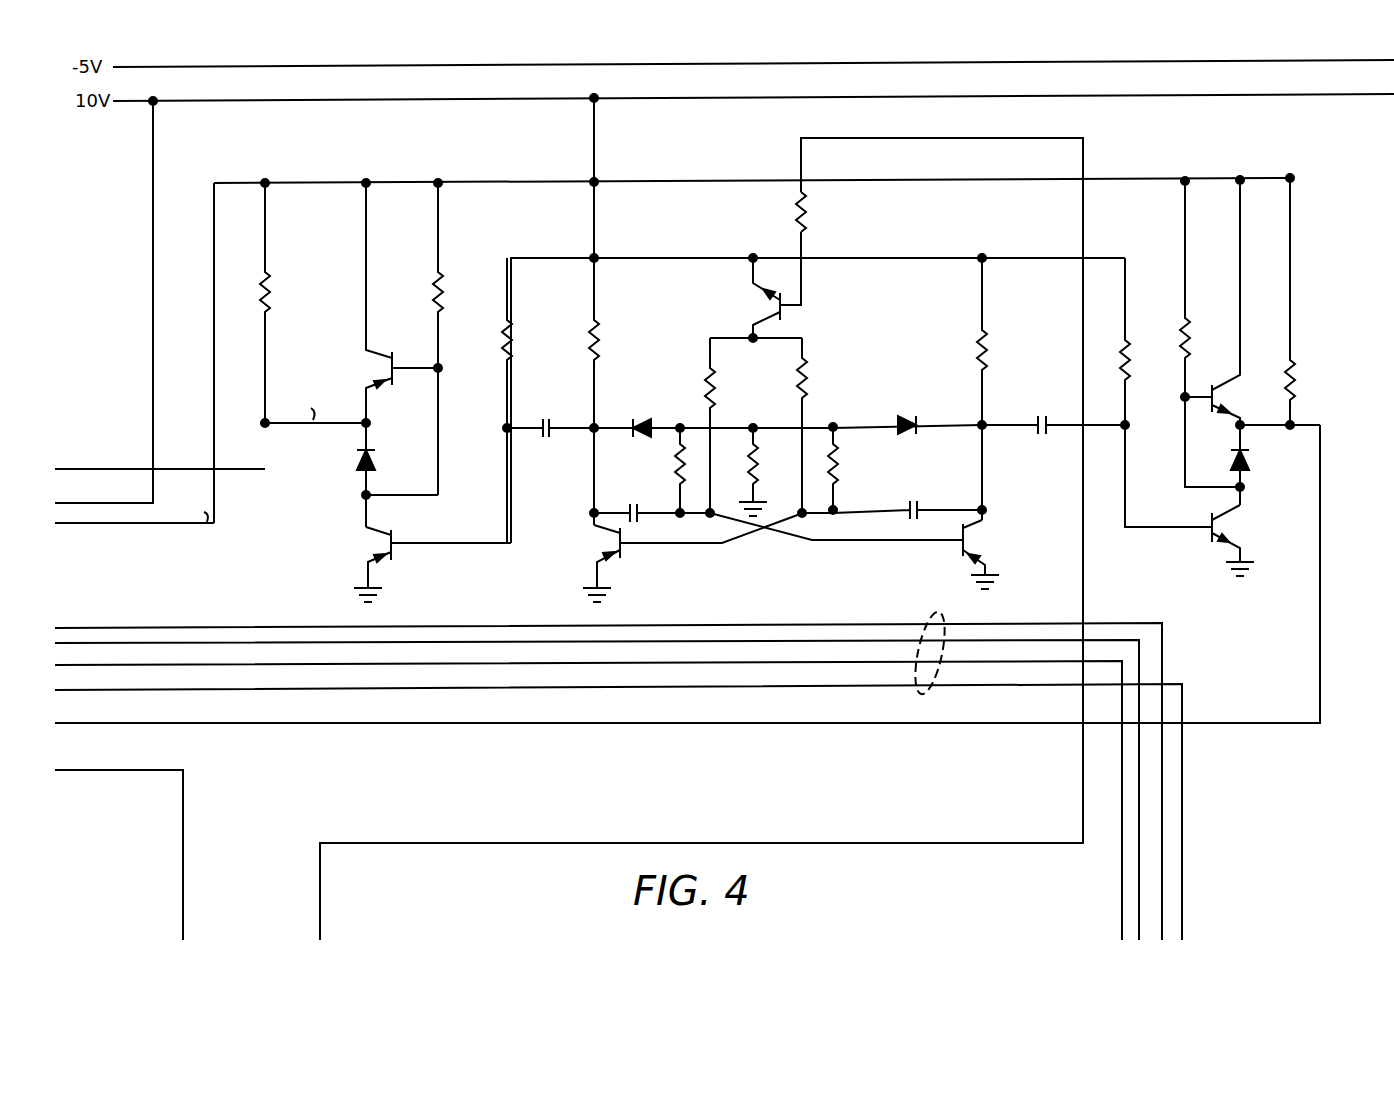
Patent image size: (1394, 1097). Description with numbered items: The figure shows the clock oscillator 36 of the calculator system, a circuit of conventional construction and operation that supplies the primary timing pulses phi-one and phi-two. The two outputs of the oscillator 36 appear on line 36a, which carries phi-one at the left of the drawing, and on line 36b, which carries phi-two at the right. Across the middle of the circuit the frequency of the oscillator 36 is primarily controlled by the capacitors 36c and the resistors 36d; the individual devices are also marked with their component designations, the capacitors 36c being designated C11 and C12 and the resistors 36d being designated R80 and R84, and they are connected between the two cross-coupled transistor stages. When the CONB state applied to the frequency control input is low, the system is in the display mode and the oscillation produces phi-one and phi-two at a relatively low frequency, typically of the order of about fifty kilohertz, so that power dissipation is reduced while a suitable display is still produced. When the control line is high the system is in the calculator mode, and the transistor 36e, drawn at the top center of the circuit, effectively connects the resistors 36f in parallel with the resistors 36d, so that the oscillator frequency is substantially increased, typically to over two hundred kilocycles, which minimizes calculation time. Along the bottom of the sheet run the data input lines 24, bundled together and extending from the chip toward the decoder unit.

The clock oscillator 36 is at (712, 154).
The line 36a is at (102, 468).
The line 36b is at (1320, 581).
The capacitors 36c is at (641, 520).
The resistors 36d is at (676, 468).
The transistor 36e is at (784, 313).
The resistors 36f is at (702, 391).
The data input lines 24 is at (926, 614).
The resistor R80 is at (670, 452).
The resistor R84 is at (837, 477).
The capacitor C11 is at (633, 503).
The capacitor C12 is at (909, 508).